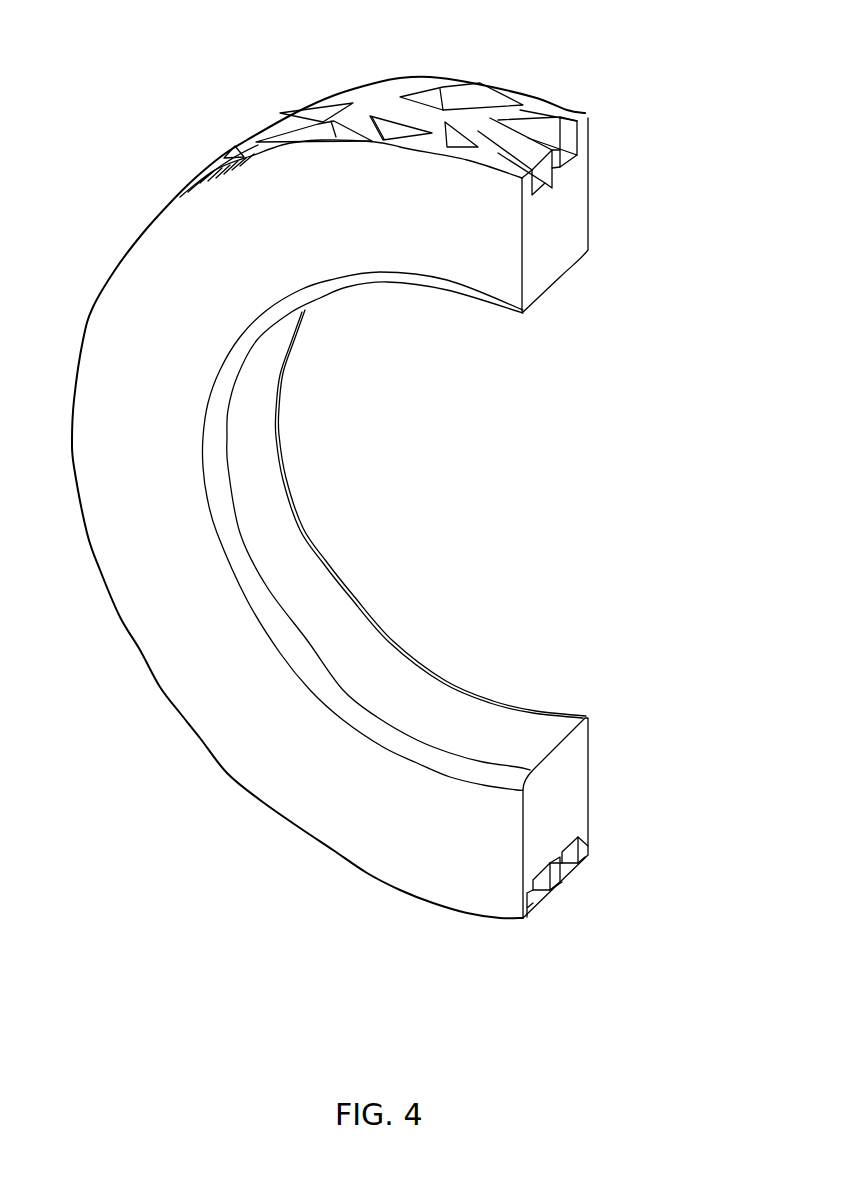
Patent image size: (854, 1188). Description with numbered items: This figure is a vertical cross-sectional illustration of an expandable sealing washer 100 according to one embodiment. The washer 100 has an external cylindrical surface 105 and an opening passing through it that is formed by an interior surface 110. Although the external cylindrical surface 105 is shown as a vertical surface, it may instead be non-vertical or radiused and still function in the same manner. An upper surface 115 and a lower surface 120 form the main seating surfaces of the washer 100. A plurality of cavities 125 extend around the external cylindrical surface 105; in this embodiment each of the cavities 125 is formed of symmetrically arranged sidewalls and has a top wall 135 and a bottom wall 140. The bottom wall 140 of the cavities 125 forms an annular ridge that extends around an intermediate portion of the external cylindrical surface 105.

The washer 100 is at (534, 1074).
The external cylindrical surface 105 is at (579, 110).
The interior surface 110 is at (342, 610).
The upper surface 115 is at (502, 268).
The lower surface 120 is at (593, 215).
The cavities 125 is at (337, 107).
The top wall 135 is at (523, 183).
The bottom wall 140 is at (578, 140).